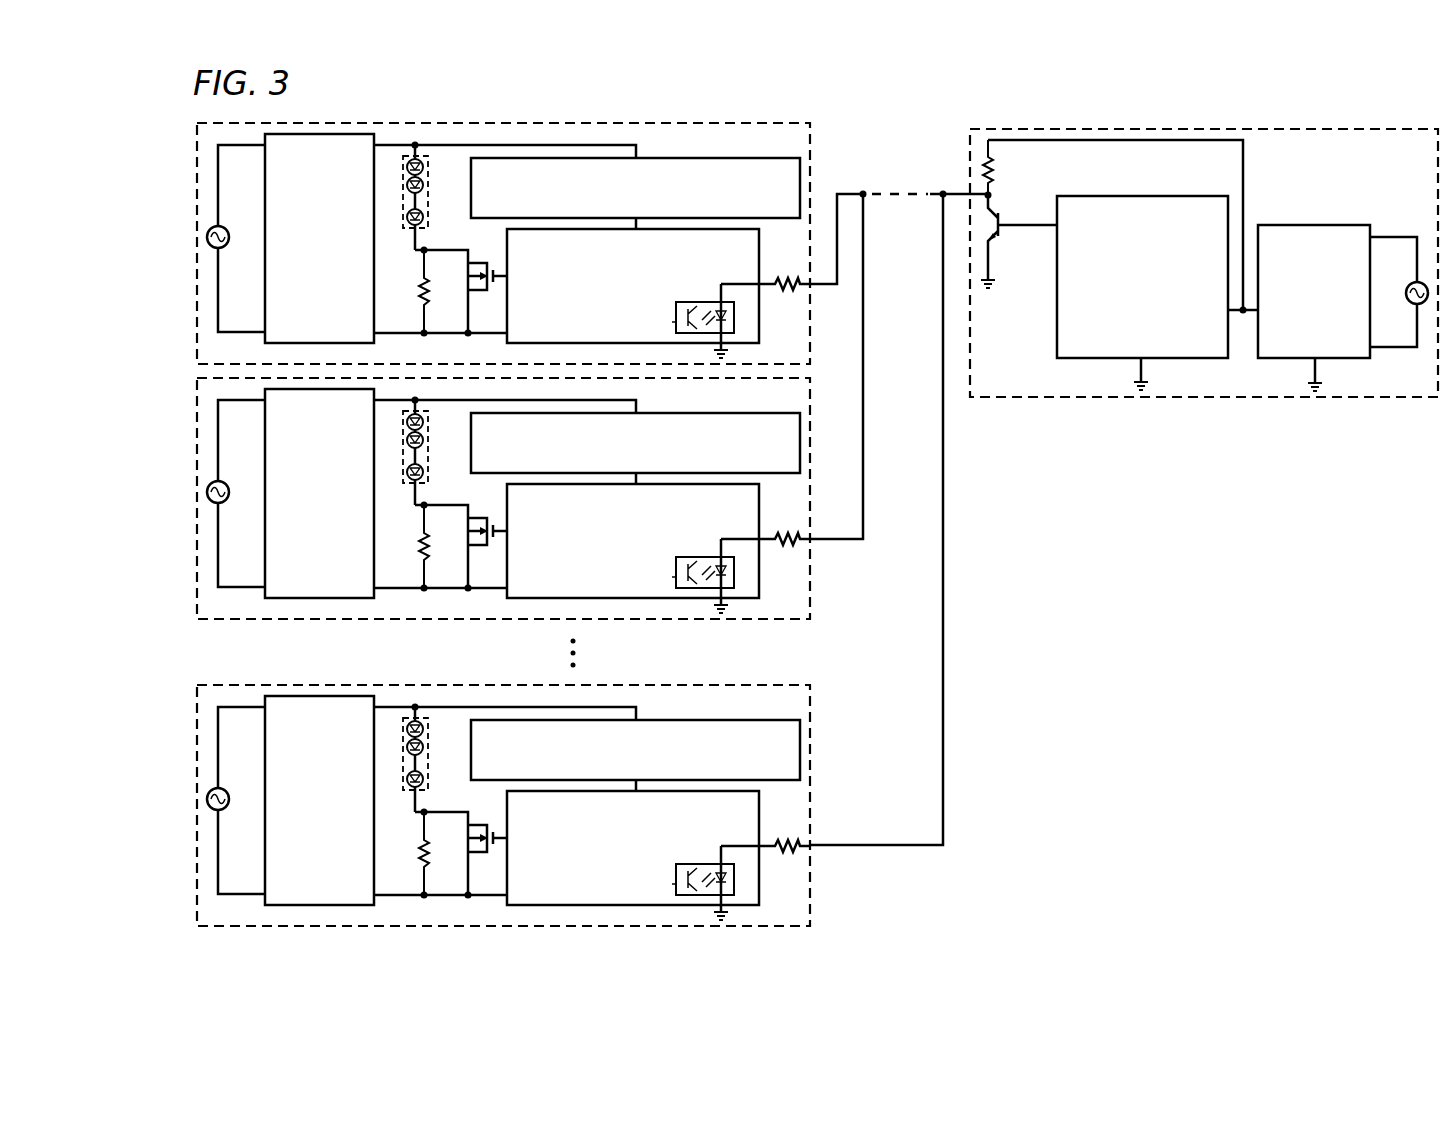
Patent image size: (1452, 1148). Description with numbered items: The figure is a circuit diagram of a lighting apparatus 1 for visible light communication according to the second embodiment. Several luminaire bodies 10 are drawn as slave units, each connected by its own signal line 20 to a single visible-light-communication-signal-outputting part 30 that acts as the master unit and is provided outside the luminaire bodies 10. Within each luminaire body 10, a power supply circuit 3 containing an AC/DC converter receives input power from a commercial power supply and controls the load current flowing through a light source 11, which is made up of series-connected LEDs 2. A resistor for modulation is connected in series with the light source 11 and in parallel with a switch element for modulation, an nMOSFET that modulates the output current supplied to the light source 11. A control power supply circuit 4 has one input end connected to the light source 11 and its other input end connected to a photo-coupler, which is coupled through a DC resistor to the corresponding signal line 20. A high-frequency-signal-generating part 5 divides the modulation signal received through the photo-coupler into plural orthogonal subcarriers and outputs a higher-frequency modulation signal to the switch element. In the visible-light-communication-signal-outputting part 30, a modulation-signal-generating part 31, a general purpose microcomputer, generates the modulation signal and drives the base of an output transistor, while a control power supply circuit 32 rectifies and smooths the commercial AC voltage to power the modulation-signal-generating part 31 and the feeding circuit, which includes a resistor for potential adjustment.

The lighting apparatus for visible light communication 1 is at (166, 153).
The LED 2 is at (428, 184).
The power supply circuit 3 is at (363, 309).
The control power supply circuit 4 is at (759, 159).
The high-frequency-signal-generating part 5 is at (757, 313).
The luminaire body 10 is at (477, 243).
The light source 11 is at (422, 206).
The signal line 20 is at (823, 285).
The visible-light-communication-signal-outputting part 30 is at (1204, 295).
The modulation-signal-generating part 31 is at (1057, 336).
The control power supply circuit 32 is at (1310, 225).